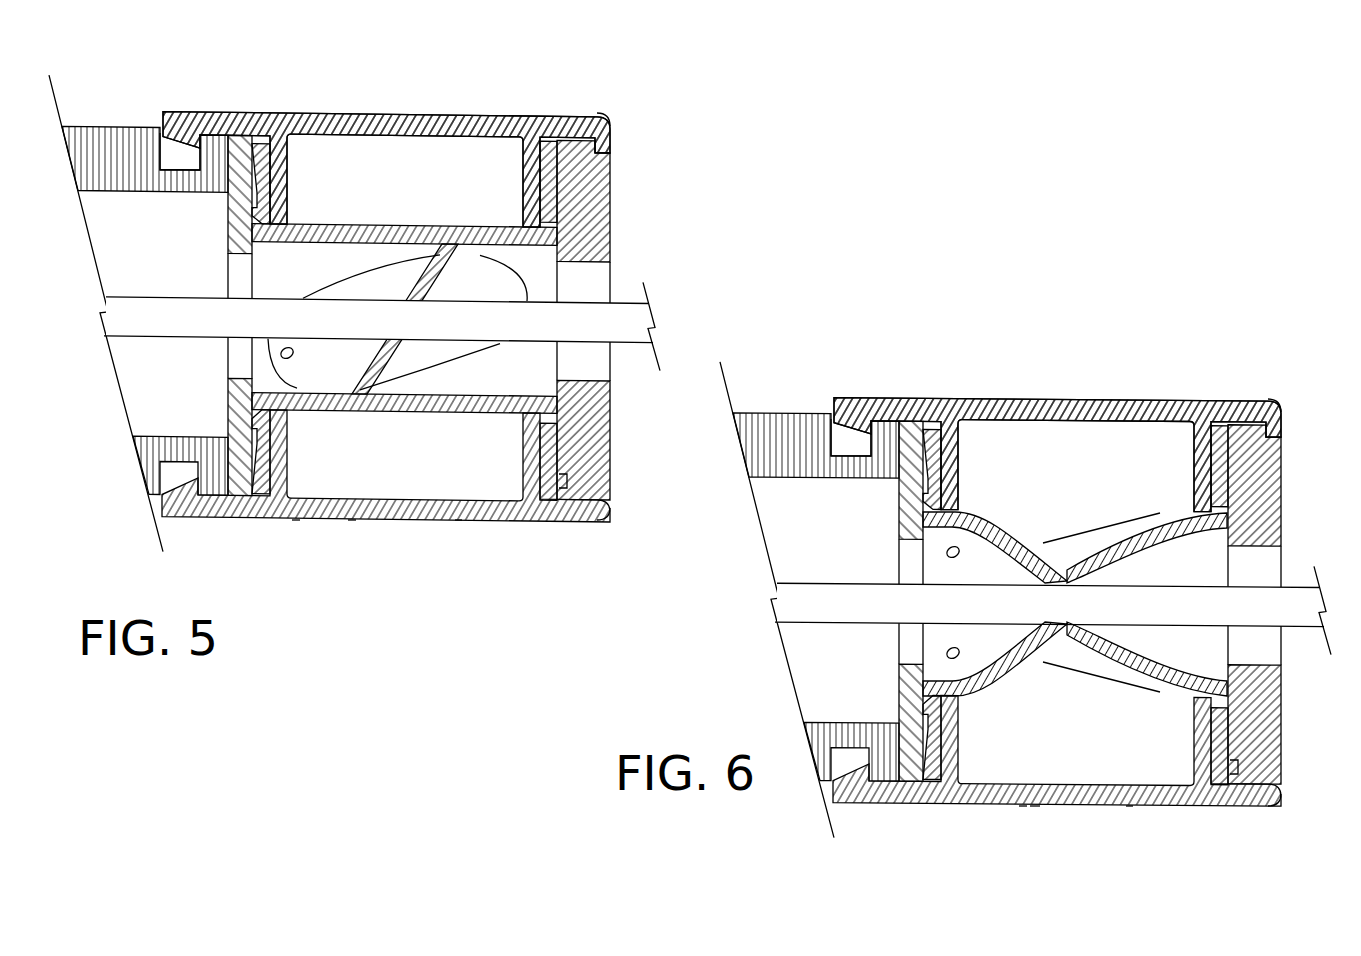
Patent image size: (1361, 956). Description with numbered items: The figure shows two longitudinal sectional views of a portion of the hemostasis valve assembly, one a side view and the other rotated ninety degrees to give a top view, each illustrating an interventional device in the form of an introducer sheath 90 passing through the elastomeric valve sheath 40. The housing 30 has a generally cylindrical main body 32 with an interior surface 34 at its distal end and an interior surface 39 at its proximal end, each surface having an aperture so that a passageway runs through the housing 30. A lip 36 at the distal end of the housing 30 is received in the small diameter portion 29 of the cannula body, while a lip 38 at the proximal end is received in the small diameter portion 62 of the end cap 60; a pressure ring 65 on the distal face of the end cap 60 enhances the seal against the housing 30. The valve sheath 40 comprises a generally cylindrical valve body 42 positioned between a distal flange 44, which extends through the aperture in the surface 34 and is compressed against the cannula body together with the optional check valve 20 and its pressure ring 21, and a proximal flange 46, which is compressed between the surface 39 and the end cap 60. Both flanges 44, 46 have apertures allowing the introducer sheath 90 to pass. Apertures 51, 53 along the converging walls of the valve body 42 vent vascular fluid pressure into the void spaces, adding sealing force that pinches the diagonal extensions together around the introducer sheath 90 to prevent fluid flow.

In FIG. 5, the check valve 20 is at (232, 497).
In FIG. 6, the check valve 20 is at (903, 800).
In FIG. 5, the pressure ring 21 is at (352, 520).
In FIG. 6, the pressure ring 21 is at (1010, 800).
In FIG. 5, the small diameter portion 29 is at (153, 507).
In FIG. 6, the small diameter portion 29 is at (828, 787).
In FIG. 5, the housing 30 is at (380, 85).
In FIG. 6, the housing 30 is at (1048, 369).
In FIG. 5, the main body 32 is at (487, 523).
In FIG. 6, the main body 32 is at (1047, 808).
In FIG. 5, the interior surface 34 is at (296, 520).
In FIG. 6, the interior surface 34 is at (1038, 808).
In FIG. 5, the lip 36 is at (197, 148).
In FIG. 6, the lip 36 is at (867, 432).
In FIG. 5, the lip 38 is at (598, 162).
In FIG. 6, the lip 38 is at (1270, 442).
In FIG. 5, the interior surface 39 is at (567, 472).
In FIG. 6, the interior surface 39 is at (1233, 757).
In FIG. 5, the valve sheath 40 is at (409, 201).
In FIG. 6, the valve sheath 40 is at (1082, 491).
In FIG. 5, the valve body 42 is at (372, 222).
In FIG. 6, the valve body 42 is at (1047, 540).
In FIG. 5, the distal flange 44 is at (258, 520).
In FIG. 6, the distal flange 44 is at (945, 800).
In FIG. 5, the proximal flange 46 is at (549, 497).
In FIG. 6, the proximal flange 46 is at (1225, 790).
In FIG. 6, the aperture 51 is at (946, 655).
In FIG. 5, the aperture 53 is at (281, 353).
In FIG. 6, the aperture 53 is at (946, 557).
In FIG. 5, the end cap 60 is at (628, 119).
In FIG. 6, the end cap 60 is at (1298, 403).
In FIG. 5, the small diameter portion 62 is at (598, 520).
In FIG. 6, the small diameter portion 62 is at (1262, 808).
In FIG. 5, the pressure ring 65 is at (458, 522).
In FIG. 6, the pressure ring 65 is at (1132, 792).
In FIG. 5, the introducer sheath 90 is at (596, 342).
In FIG. 6, the introducer sheath 90 is at (1263, 627).